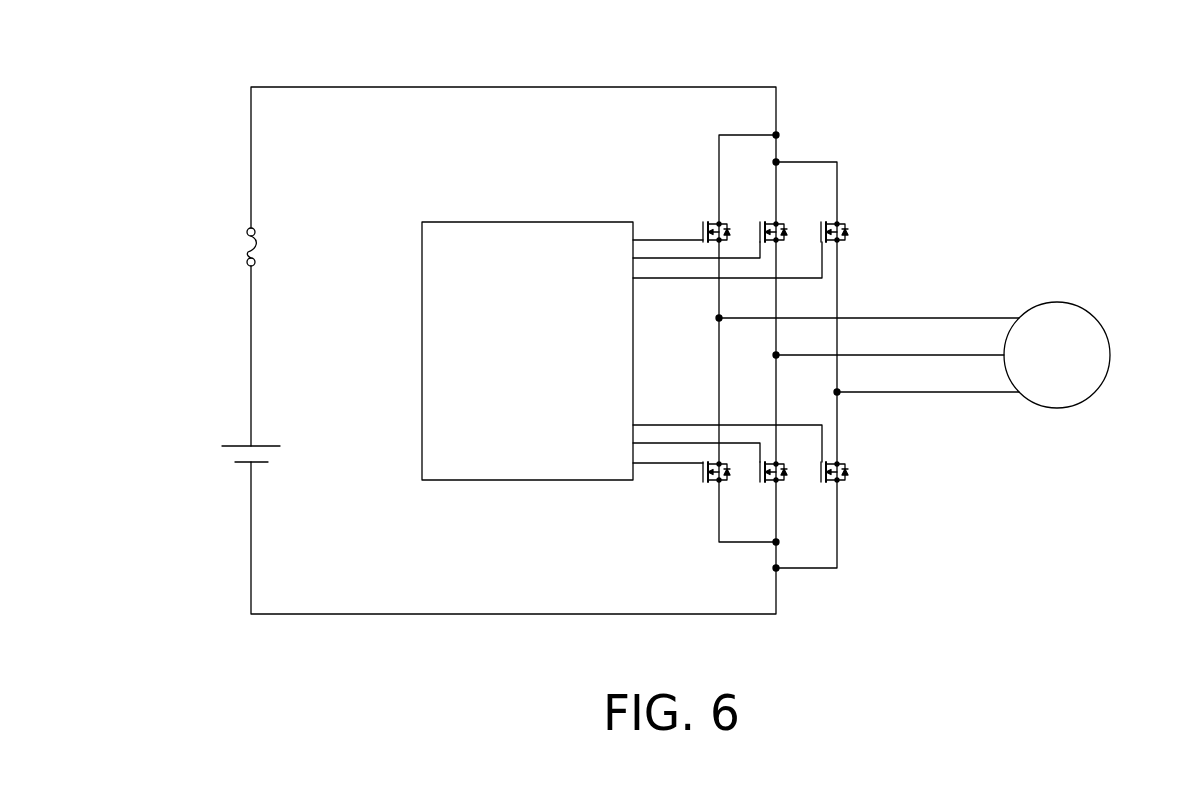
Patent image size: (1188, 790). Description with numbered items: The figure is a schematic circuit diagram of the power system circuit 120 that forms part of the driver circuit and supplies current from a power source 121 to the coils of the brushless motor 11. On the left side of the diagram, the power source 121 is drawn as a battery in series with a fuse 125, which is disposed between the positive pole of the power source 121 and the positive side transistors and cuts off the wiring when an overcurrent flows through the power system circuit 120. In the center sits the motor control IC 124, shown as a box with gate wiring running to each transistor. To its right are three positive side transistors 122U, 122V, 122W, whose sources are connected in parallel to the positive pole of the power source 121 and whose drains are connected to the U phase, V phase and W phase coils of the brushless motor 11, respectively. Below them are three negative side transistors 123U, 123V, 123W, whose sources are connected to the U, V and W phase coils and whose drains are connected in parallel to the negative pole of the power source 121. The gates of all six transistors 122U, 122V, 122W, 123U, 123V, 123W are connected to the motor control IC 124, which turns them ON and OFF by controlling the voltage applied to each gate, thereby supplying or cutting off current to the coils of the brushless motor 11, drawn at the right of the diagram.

The power system circuit 120 is at (985, 77).
The fuse 125 is at (247, 262).
The power source 121 is at (232, 444).
The motor control IC 124 is at (452, 222).
The positive side transistor 122U is at (710, 207).
The positive side transistor 122V is at (767, 207).
The positive side transistor 122W is at (827, 207).
The negative side transistor 123U is at (710, 493).
The negative side transistor 123V is at (767, 493).
The negative side transistor 123W is at (827, 493).
The brushless motor 11 is at (1110, 355).